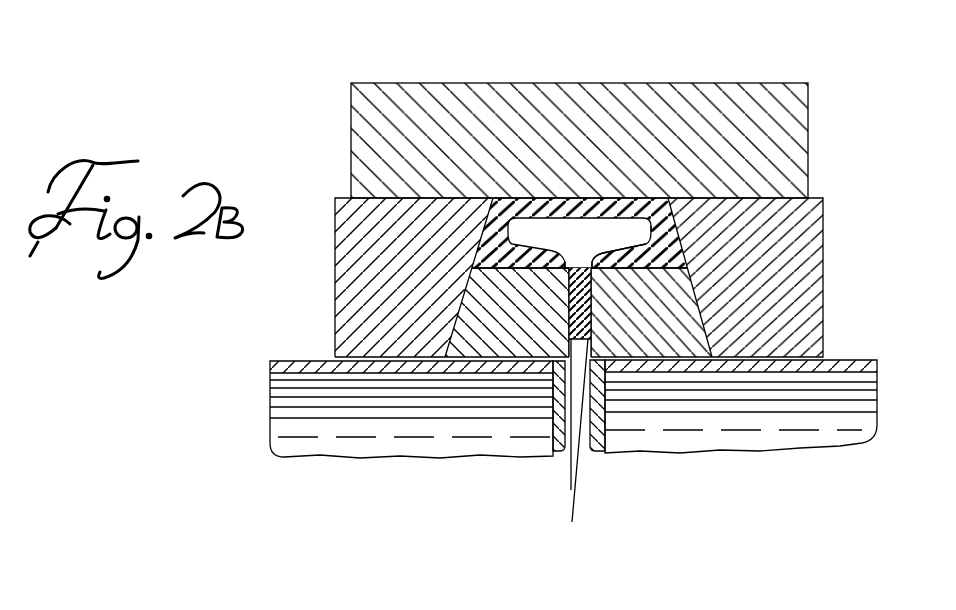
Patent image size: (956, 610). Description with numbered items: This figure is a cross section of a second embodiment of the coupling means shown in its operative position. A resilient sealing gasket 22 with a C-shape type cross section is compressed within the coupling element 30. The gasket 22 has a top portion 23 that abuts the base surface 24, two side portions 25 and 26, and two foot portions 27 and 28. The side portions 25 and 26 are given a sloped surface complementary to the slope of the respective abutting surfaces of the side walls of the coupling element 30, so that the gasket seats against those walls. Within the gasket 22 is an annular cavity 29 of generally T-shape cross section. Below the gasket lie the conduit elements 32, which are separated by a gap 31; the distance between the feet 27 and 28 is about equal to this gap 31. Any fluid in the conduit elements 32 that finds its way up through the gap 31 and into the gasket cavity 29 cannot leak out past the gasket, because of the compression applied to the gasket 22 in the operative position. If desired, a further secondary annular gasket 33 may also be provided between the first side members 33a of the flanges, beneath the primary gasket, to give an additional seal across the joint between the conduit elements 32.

The coupling element 30 is at (437, 83).
The side portion 25 is at (494, 231).
The resilient sealing gasket 22 is at (607, 192).
The annular cavity 29 is at (537, 230).
The gap 31 is at (578, 264).
The base surface 24 is at (608, 260).
The top portion 23 is at (650, 212).
The side portion 26 is at (660, 224).
The foot portion 27 is at (532, 268).
The foot portion 28 is at (609, 268).
The first side members of the flanges 33a is at (566, 322).
The secondary gasket 33 is at (568, 452).
The conduit elements 32 is at (337, 423).